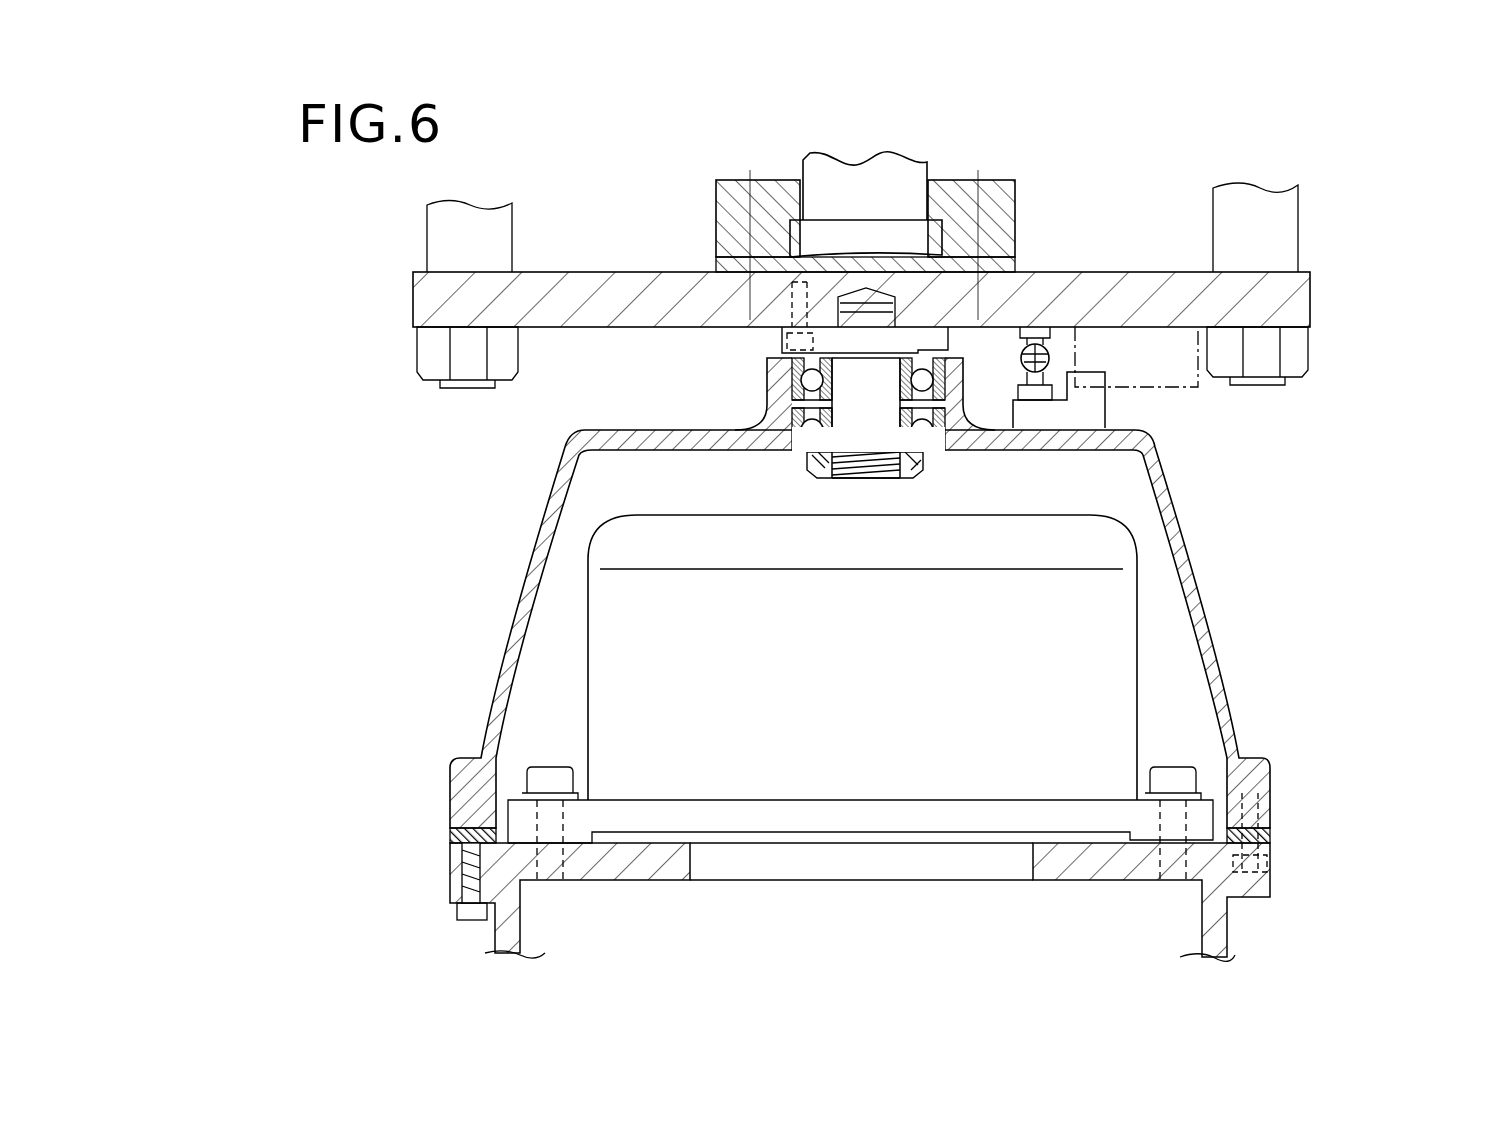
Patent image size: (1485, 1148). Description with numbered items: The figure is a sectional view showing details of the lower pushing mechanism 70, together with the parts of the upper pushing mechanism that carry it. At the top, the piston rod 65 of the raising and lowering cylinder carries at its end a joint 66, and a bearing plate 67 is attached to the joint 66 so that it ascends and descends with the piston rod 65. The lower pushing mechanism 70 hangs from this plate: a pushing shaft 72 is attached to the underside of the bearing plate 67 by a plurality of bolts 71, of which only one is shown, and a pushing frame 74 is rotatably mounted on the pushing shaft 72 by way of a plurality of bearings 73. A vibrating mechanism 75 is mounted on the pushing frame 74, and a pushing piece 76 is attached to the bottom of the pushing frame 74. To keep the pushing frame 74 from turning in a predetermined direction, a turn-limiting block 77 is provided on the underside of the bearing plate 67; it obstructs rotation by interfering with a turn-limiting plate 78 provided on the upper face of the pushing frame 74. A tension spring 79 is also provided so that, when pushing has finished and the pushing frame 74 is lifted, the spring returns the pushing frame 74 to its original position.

The piston rod 65 is at (928, 168).
The joint 66 is at (716, 207).
The bearing plate 67 is at (1310, 284).
The lower pushing mechanism 70 is at (307, 913).
The bolts 71 is at (787, 336).
The pushing shaft 72 is at (867, 478).
The bearings 73 is at (762, 434).
The pushing frame 74 is at (500, 668).
The vibrating mechanism 75 is at (587, 583).
The pushing piece 76 is at (495, 940).
The turn-limiting block 77 is at (1183, 387).
The turn-limiting plate 78 is at (1105, 407).
The tension spring 79 is at (1050, 360).